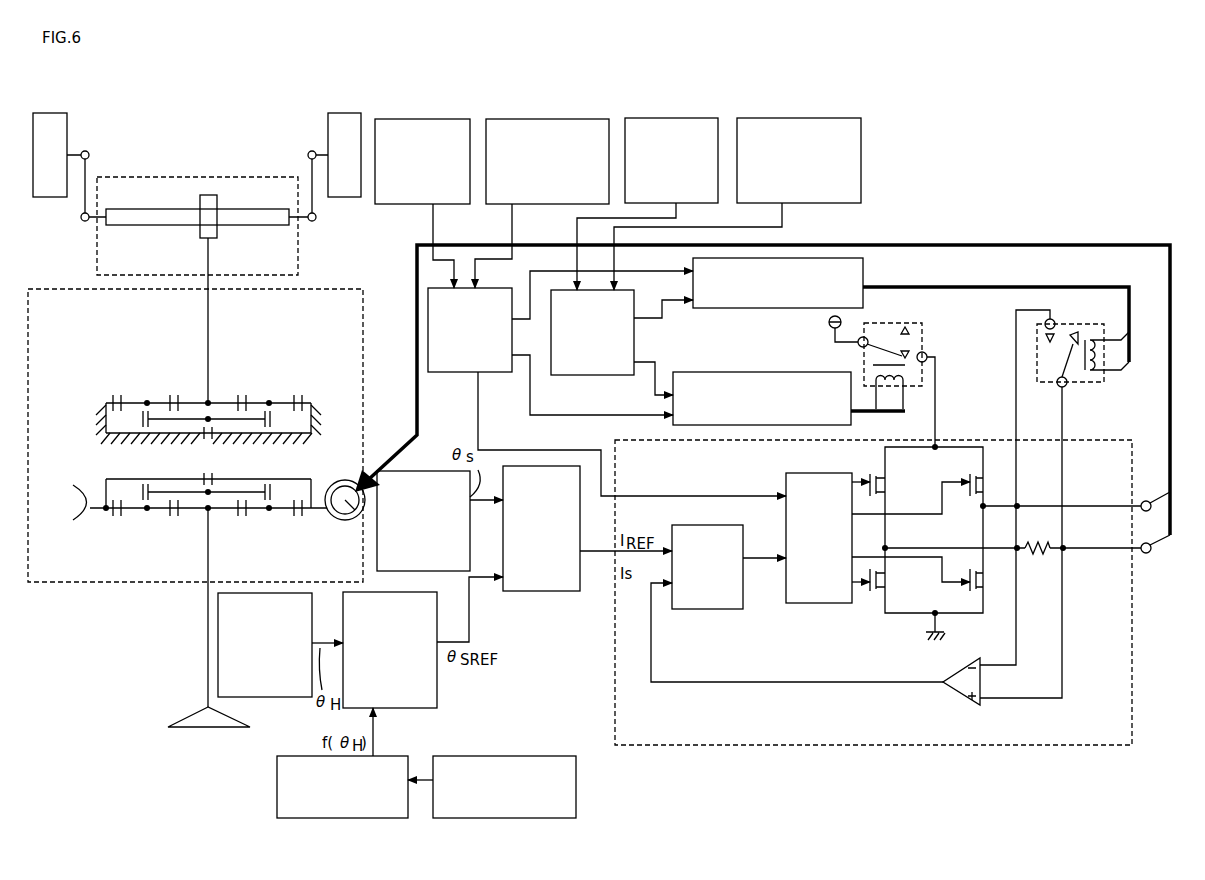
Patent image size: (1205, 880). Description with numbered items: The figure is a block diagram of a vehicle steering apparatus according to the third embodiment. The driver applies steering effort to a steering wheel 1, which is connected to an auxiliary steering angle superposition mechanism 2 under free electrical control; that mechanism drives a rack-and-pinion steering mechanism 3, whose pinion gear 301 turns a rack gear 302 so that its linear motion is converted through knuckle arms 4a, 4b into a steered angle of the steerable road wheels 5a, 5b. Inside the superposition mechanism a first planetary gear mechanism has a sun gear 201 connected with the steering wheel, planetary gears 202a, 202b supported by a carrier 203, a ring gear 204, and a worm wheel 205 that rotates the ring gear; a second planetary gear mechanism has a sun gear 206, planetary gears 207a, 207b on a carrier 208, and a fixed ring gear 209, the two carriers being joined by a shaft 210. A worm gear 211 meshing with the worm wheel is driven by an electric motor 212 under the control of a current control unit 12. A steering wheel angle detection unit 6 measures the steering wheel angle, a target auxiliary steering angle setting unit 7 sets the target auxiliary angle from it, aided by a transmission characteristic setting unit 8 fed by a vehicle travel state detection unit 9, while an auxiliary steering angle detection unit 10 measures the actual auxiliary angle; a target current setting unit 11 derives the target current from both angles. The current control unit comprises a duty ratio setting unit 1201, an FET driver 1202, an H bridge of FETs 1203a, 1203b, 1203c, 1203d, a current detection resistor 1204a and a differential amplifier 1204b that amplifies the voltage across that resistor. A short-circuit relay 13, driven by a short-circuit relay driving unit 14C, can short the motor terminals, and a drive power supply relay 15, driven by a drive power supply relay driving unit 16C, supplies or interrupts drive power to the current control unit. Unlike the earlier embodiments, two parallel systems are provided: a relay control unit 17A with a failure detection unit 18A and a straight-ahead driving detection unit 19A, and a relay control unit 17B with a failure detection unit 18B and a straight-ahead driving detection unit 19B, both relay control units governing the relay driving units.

The steering wheel 1 is at (205, 730).
The auxiliary steering angle superposition mechanism 2 is at (55, 289).
The steering mechanism 3 is at (97, 244).
The knuckle arm 4a is at (89, 155).
The knuckle arm 4b is at (308, 155).
The steerable road wheel 5a is at (48, 113).
The steerable road wheel 5b is at (340, 113).
The steering wheel angle detection unit 6 is at (275, 697).
The target auxiliary steering angle setting unit 7 is at (437, 688).
The transmission characteristic setting unit 8 is at (385, 756).
The vehicle travel state detection unit 9 is at (490, 756).
The auxiliary steering angle detection unit 10 is at (397, 471).
The target current setting unit 11 is at (540, 591).
The current control unit 12 is at (730, 745).
The short-circuit relay 13 is at (1075, 385).
The short-circuit relay driving unit 14C is at (743, 308).
The drive power supply relay 15 is at (922, 332).
The drive power supply relay driving unit 16C is at (703, 372).
The relay control unit 17A is at (490, 372).
The relay control unit 17B is at (575, 375).
The failure detection unit 18A is at (423, 119).
The failure detection unit 18B is at (678, 118).
The straight-ahead driving detection unit 19A is at (548, 119).
The straight-ahead driving detection unit 19B is at (803, 118).
The sun gear 201 is at (200, 512).
The planetary gear 202a is at (145, 512).
The planetary gear 202b is at (268, 512).
The carrier 203 is at (163, 496).
The ring gear 204 is at (105, 512).
The worm wheel 205 is at (88, 490).
The sun gear 206 is at (215, 400).
The planetary gear 207a is at (146, 400).
The planetary gear 207b is at (282, 400).
The carrier 208 is at (160, 440).
The fixed ring gear 209 is at (104, 402).
The shaft 210 is at (204, 478).
The worm gear 211 is at (333, 485).
The electric motor 212 is at (345, 516).
The pinion gear 301 is at (208, 195).
The rack gear 302 is at (165, 218).
The duty ratio setting unit 1201 is at (710, 609).
The FET driver 1202 is at (820, 603).
The FET 1203a is at (865, 474).
The FET 1203b is at (868, 600).
The FET 1203c is at (965, 474).
The FET 1203d is at (965, 592).
The current detection resistor 1204a is at (1032, 546).
The differential amplifier 1204b is at (952, 700).